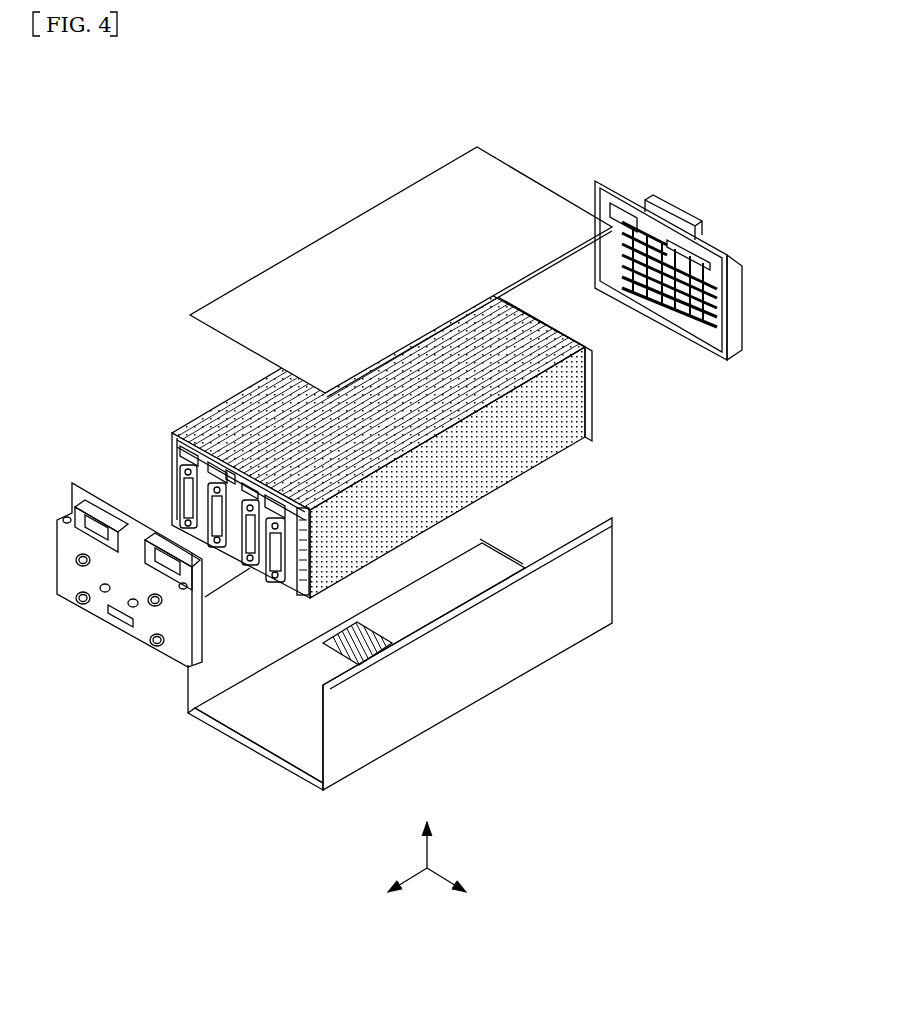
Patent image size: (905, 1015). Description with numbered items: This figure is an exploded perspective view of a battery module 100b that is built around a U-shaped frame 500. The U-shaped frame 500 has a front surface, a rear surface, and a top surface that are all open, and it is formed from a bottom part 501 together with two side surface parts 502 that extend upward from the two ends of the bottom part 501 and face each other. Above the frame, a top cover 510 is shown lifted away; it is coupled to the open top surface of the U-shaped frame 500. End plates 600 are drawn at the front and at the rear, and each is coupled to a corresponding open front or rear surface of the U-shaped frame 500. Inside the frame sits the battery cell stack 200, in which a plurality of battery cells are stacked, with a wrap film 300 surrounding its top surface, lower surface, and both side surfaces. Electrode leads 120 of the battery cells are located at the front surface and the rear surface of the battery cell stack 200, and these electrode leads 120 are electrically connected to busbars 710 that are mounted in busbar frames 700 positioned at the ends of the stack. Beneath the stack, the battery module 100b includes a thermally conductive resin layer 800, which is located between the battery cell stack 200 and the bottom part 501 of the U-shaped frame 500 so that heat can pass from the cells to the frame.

The battery module 100b is at (163, 131).
The top cover 510 is at (346, 253).
The battery cell stack 200 is at (409, 434).
The wrap film 300 is at (541, 442).
The busbar frame 700 is at (160, 463).
The busbar 710 is at (320, 583).
The electrode lead 120 is at (288, 548).
The end plate 600 is at (624, 190).
The U-shaped frame 500 is at (359, 668).
The bottom part 501 is at (356, 671).
The side surface part 502 is at (334, 710).
The thermally conductive resin layer 800 is at (324, 673).